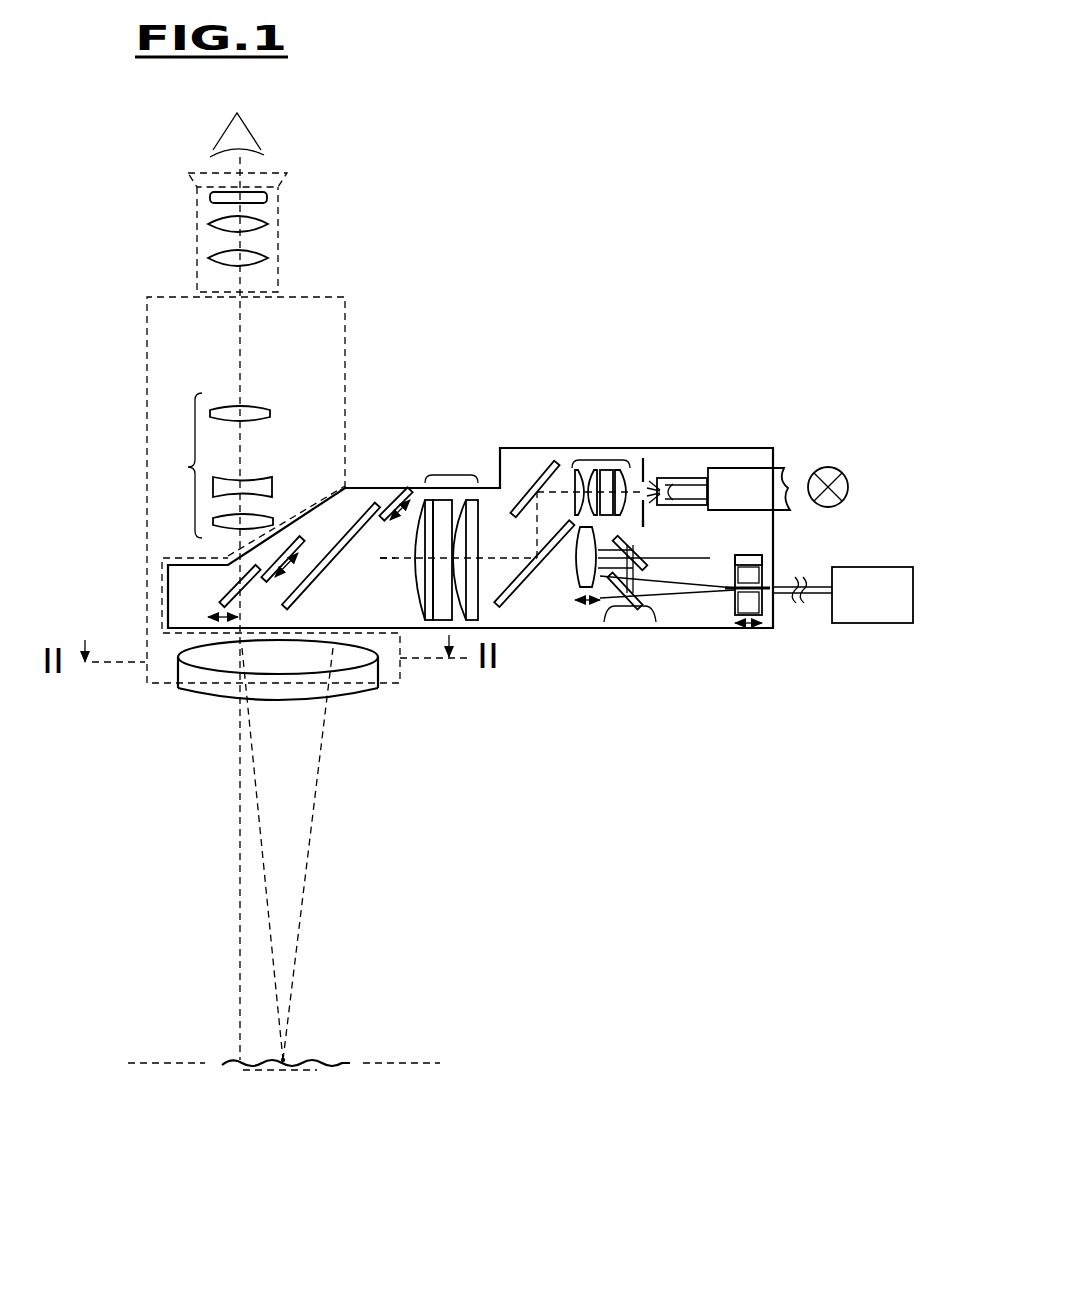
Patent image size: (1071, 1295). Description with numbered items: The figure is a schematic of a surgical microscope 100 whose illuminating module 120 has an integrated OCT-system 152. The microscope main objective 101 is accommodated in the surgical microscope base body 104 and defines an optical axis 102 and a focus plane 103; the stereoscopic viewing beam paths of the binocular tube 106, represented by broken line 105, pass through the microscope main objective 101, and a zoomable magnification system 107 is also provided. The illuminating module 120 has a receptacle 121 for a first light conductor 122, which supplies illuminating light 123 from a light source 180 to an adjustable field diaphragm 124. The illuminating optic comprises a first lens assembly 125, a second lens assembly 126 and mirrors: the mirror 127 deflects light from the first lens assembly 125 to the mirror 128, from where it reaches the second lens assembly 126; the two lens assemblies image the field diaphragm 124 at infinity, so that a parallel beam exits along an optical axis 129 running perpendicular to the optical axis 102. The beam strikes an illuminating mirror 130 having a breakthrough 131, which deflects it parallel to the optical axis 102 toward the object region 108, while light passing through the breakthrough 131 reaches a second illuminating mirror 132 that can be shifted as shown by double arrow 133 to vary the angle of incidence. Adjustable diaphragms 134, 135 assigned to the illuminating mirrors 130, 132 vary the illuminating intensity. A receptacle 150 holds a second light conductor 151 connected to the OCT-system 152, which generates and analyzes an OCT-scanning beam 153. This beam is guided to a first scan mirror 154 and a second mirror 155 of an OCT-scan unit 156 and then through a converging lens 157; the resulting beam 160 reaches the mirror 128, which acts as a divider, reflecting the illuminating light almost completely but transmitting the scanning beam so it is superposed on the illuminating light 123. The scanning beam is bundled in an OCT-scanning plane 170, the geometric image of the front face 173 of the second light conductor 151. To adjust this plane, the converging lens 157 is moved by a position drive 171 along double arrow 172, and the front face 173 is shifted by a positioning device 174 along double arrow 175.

The surgical microscope 100 is at (600, 188).
The microscope main objective 101 is at (193, 683).
The optical axis 102 is at (278, 782).
The focus plane 103 is at (403, 1063).
The surgical microscope base body 104 is at (358, 306).
The stereoscopic viewing beam paths 105 is at (240, 338).
The binocular tube 106 is at (197, 224).
The zoomable magnification system 107 is at (188, 467).
The object region 108 is at (310, 1060).
The illuminating module 120 is at (640, 448).
The receptacle 121 is at (656, 478).
The first light conductor 122 is at (783, 468).
The illuminating light 123 is at (649, 460).
The adjustable field diaphragm 124 is at (643, 522).
The first lens assembly 125 is at (600, 460).
The second lens assembly 126 is at (450, 473).
The mirror 127 is at (540, 478).
The mirror 128 is at (505, 598).
The optical axis of the illuminating beam path 129 is at (393, 560).
The illuminating mirror 130 is at (357, 490).
The breakthrough 131 is at (333, 590).
The illuminating mirror 132 is at (223, 604).
The double arrow 133 is at (222, 617).
The adjustable diaphragm 134 is at (298, 535).
The adjustable diaphragm 135 is at (396, 495).
The receptacle 150 is at (771, 622).
The second light conductor 151 is at (728, 622).
The OCT-system 152 is at (888, 607).
The OCT-scanning beam 153 is at (678, 600).
The first scan mirror 154 is at (653, 612).
The second mirror 155 is at (633, 542).
The OCT-scan unit 156 is at (645, 612).
The converging lens 157 is at (603, 612).
The beam 160 is at (570, 584).
The OCT-scanning plane 170 is at (278, 1070).
The position drive 171 is at (572, 523).
The double arrow 172 is at (587, 604).
The front face 173 is at (697, 600).
The positioning device 174 is at (767, 553).
The double arrow 175 is at (747, 617).
The light source 180 is at (848, 483).